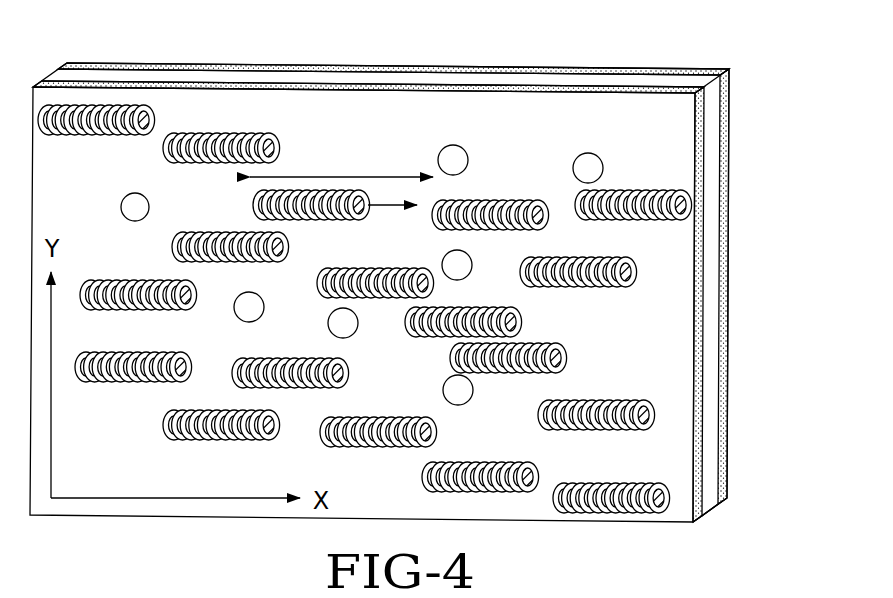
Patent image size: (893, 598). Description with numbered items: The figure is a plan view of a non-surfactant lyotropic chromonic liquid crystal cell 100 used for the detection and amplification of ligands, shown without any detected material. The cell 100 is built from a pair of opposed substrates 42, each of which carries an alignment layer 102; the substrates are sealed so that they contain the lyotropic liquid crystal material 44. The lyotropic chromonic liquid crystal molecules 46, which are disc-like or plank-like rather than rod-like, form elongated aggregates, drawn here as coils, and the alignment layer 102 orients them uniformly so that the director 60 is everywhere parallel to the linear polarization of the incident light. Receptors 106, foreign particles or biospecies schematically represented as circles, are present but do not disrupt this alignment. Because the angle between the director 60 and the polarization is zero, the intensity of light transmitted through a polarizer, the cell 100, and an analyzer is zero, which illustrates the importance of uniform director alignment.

The lyotropic liquid crystal cell 100 is at (742, 91).
The opposed substrates 42 is at (703, 267).
The lyotropic liquid crystal material 44 is at (624, 82).
The lyotropic chromonic liquid crystal molecules 46 is at (665, 190).
The director 60 is at (382, 208).
The alignment layer 102 is at (707, 490).
The receptors 106 is at (121, 207).